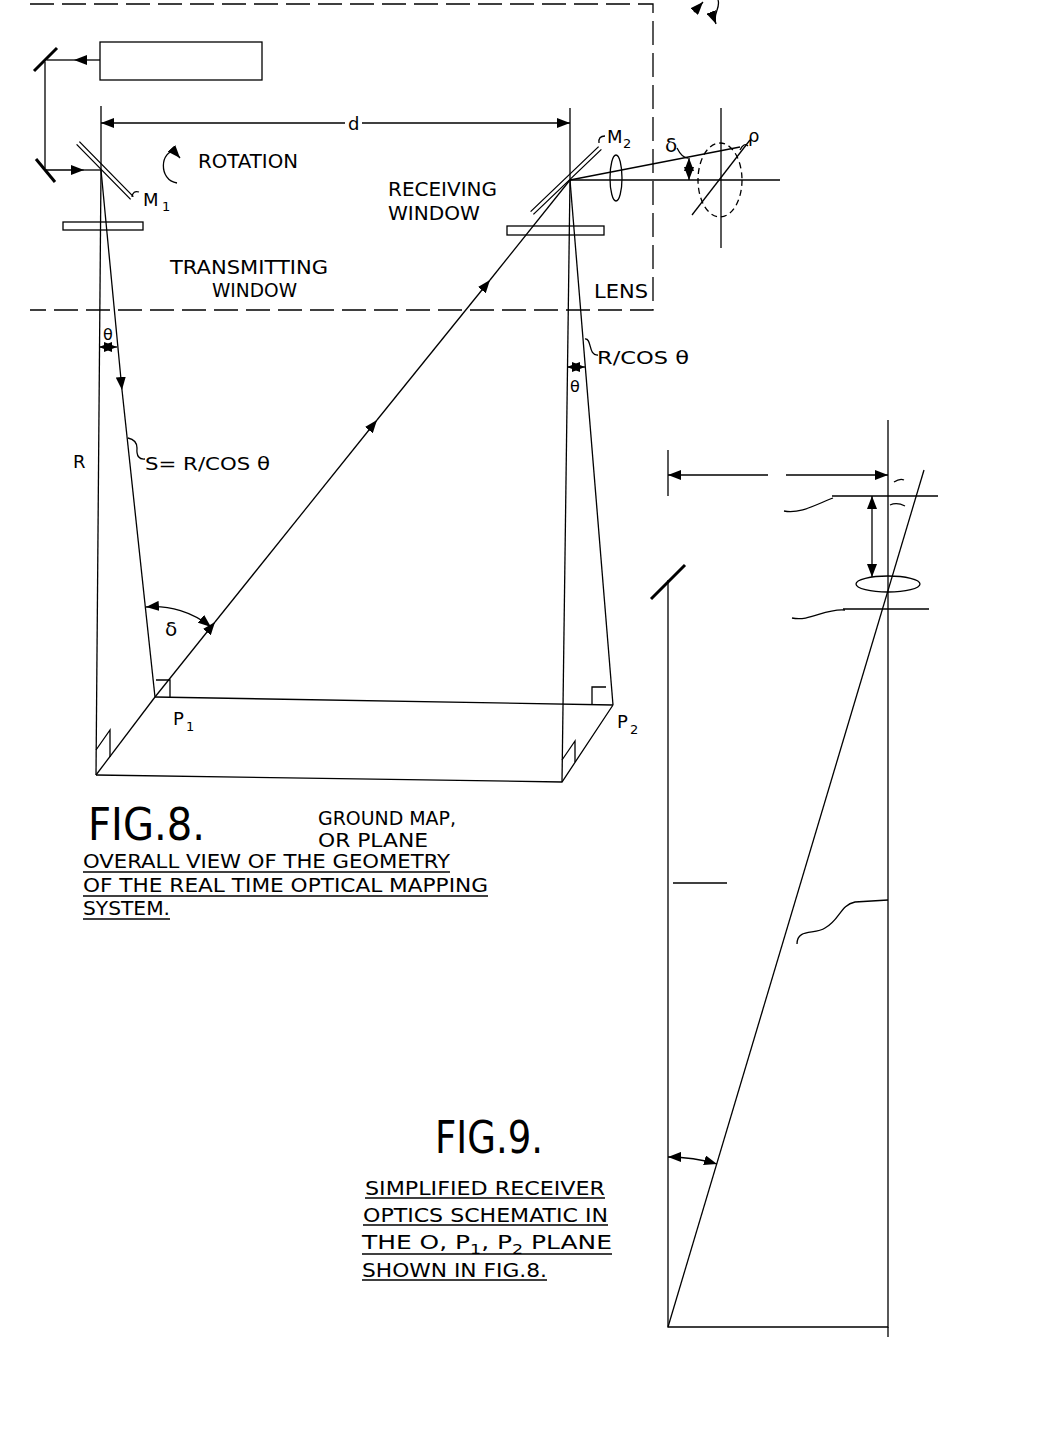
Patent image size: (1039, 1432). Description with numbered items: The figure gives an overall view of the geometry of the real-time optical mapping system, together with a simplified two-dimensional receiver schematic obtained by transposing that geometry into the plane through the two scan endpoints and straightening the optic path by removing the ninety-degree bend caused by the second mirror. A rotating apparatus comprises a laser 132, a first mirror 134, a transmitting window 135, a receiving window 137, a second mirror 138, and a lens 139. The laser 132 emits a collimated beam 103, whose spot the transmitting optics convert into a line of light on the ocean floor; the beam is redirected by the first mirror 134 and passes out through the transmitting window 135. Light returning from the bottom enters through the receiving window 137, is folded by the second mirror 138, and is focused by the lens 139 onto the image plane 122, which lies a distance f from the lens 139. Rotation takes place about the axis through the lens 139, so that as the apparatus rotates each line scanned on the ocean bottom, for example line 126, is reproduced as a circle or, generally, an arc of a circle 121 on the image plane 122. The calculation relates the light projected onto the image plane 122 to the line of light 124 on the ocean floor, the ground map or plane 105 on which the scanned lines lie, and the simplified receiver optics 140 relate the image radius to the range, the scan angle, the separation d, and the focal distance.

In FIG. 8, the collimated beam 103 is at (88, 60).
In FIG. 8, the laser 132 is at (250, 42).
In FIG. 8, the first mirror 134 is at (116, 178).
In FIG. 8, the transmitting window 135 is at (143, 227).
In FIG. 8, the receiving window 137 is at (520, 226).
In FIG. 8, the second mirror 138 is at (584, 150).
In FIG. 8, the lens 139 is at (618, 199).
In FIG. 8, the arc of a circle 121 is at (738, 213).
In FIG. 8, the image plane 122 is at (720, 114).
In FIG. 8, the line of light 124 is at (438, 705).
In FIG. 8, the line 126 is at (127, 735).
In FIG. 8, the ground map or plane 105 is at (354, 752).
In FIG. 9, the simplified receiver optics 140 is at (625, 978).